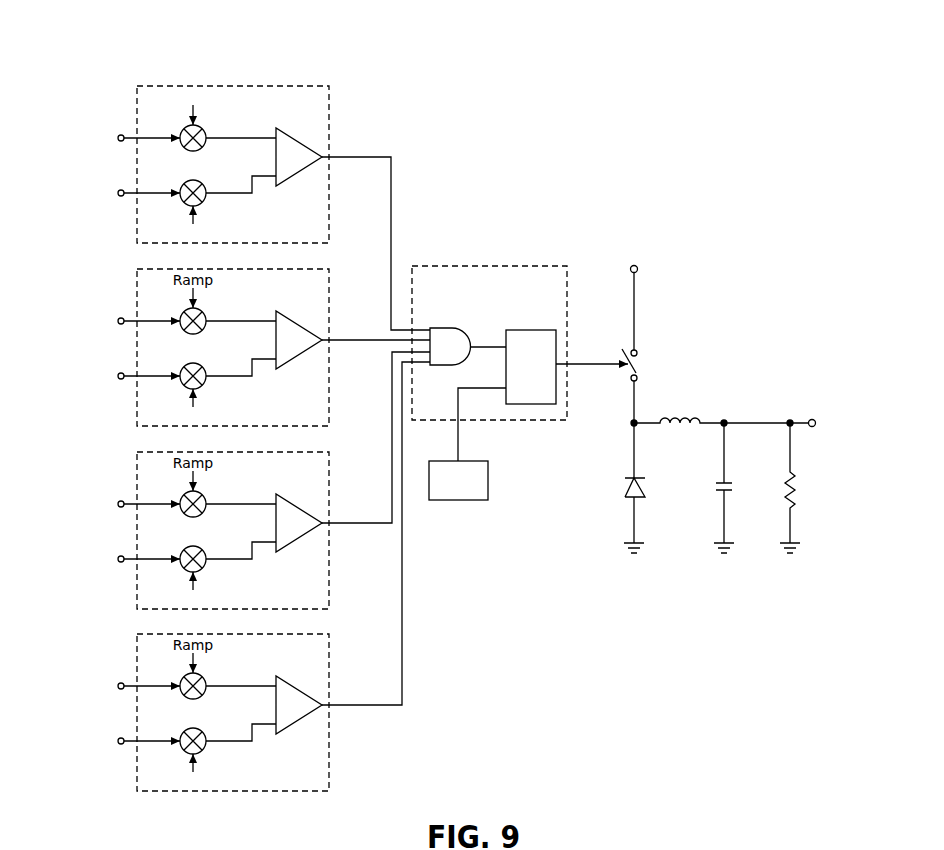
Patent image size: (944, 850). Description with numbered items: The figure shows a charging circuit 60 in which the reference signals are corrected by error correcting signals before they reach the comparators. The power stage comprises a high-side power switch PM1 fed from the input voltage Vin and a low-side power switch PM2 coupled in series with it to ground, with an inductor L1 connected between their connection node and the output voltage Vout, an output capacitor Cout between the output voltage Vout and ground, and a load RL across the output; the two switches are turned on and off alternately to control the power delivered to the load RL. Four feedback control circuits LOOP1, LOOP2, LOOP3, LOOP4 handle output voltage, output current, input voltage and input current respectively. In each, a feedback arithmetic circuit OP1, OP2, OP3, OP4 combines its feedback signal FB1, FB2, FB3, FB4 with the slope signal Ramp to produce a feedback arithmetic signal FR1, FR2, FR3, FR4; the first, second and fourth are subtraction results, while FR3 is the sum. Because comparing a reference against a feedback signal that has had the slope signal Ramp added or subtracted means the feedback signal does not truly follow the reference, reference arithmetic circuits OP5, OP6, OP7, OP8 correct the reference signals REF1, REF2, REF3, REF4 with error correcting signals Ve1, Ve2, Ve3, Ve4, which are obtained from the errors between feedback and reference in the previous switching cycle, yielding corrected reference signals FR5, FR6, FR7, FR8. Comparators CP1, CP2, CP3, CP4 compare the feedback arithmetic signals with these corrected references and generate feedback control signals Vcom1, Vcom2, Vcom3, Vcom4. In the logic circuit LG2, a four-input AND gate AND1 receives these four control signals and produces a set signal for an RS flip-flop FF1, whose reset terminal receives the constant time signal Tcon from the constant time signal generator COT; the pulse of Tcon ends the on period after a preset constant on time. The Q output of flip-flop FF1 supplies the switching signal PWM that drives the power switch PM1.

The charging circuit 60 is at (720, 172).
The first feedback control circuit LOOP1 is at (233, 164).
The second feedback control circuit LOOP2 is at (233, 347).
The third feedback control circuit LOOP3 is at (233, 530).
The fourth feedback control circuit LOOP4 is at (233, 712).
The feedback arithmetic circuit OP1 is at (195, 151).
The feedback arithmetic circuit OP2 is at (176, 330).
The feedback arithmetic circuit OP3 is at (176, 513).
The feedback arithmetic circuit OP4 is at (176, 695).
The reference arithmetic circuit OP5 is at (191, 180).
The reference arithmetic circuit OP6 is at (212, 366).
The reference arithmetic circuit OP7 is at (212, 549).
The reference arithmetic circuit OP8 is at (212, 731).
The first comparator CP1 is at (299, 157).
The second comparator CP2 is at (299, 340).
The third comparator CP3 is at (299, 523).
The fourth comparator CP4 is at (299, 705).
The feedback arithmetic signal FR1 is at (241, 129).
The feedback arithmetic signal FR2 is at (241, 312).
The feedback arithmetic signal FR3 is at (241, 495).
The feedback arithmetic signal FR4 is at (241, 677).
The reference arithmetic signal FR5 is at (241, 195).
The reference arithmetic signal FR6 is at (241, 378).
The reference arithmetic signal FR7 is at (241, 561).
The reference arithmetic signal FR8 is at (241, 743).
The feedback signal FB1 is at (133, 138).
The feedback signal FB2 is at (133, 321).
The feedback signal FB3 is at (133, 504).
The feedback signal FB4 is at (133, 686).
The reference signal REF1 is at (128, 193).
The reference signal REF2 is at (128, 376).
The reference signal REF3 is at (128, 559).
The reference signal REF4 is at (128, 741).
The error correcting signal Ve1 is at (193, 223).
The error correcting signal Ve2 is at (193, 406).
The error correcting signal Ve3 is at (193, 589).
The error correcting signal Ve4 is at (193, 771).
The slope signal Ramp is at (193, 107).
The first feedback control signal Vcom1 is at (376, 234).
The second feedback control signal Vcom2 is at (376, 330).
The third feedback control signal Vcom3 is at (376, 437).
The fourth feedback control signal Vcom4 is at (376, 533).
The logic circuit LG2 is at (489, 343).
The AND gate AND1 is at (468, 346).
The RS flip-flop FF1 is at (531, 358).
The constant time signal Tcon is at (482, 415).
The constant time signal generator COT is at (458, 480).
The switching signal PWM is at (592, 355).
The input voltage Vin is at (634, 299).
The power switch PM1 is at (647, 413).
The power switch PM2 is at (653, 515).
The inductor L1 is at (679, 411).
The output capacitor Cout is at (741, 488).
The load RL is at (799, 488).
The output voltage Vout is at (775, 413).